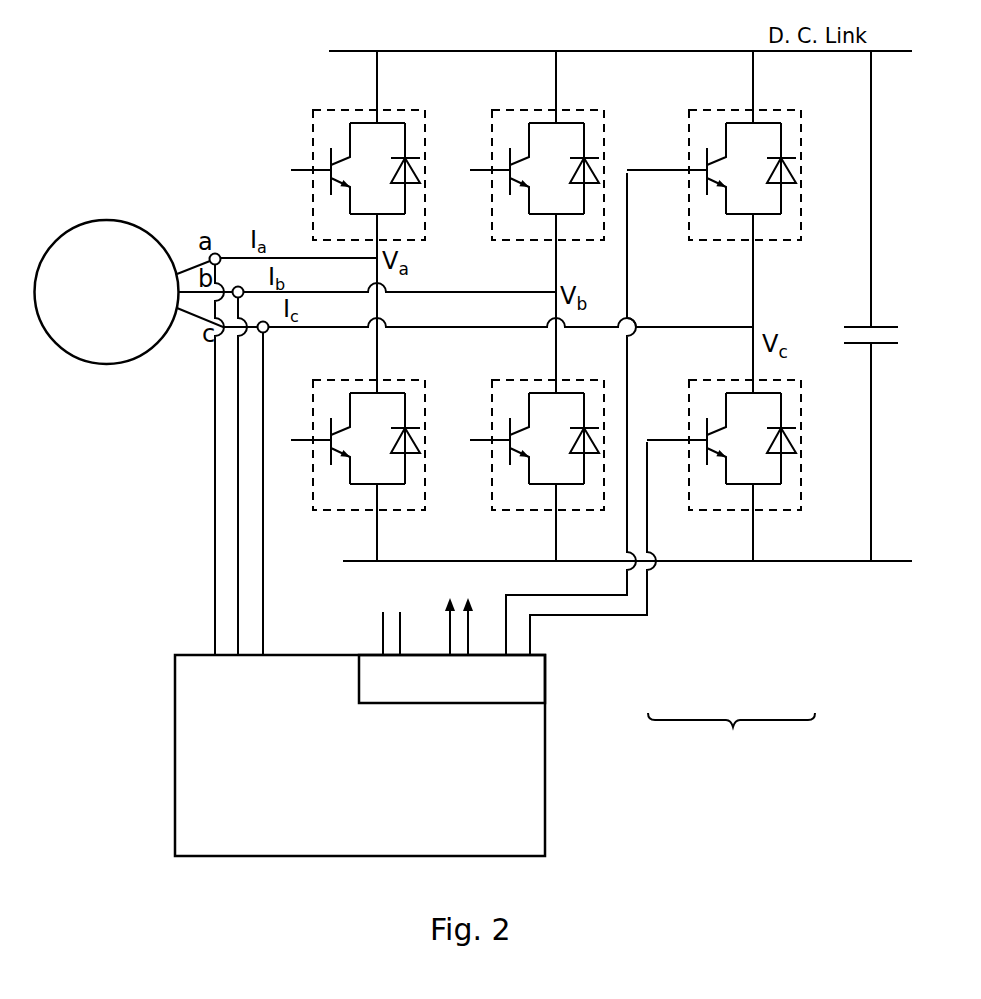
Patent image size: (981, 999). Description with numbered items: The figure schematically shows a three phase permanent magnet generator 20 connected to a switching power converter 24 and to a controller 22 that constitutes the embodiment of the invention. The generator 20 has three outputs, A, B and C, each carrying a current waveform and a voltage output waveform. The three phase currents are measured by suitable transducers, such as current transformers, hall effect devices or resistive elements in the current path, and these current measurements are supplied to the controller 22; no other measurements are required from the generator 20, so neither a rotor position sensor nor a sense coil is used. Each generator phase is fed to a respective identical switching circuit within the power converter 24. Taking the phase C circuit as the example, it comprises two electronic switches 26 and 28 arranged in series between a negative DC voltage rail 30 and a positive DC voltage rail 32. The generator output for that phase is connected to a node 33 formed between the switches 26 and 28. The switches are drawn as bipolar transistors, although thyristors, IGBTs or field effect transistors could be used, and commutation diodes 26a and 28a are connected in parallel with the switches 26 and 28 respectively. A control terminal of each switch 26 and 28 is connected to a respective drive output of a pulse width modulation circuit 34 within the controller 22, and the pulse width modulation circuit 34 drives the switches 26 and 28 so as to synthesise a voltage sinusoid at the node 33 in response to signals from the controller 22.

The three phase permanent magnet generator 20 is at (108, 217).
The controller 22 is at (545, 805).
The power converter 24 is at (731, 738).
The electronic switch 26 is at (720, 462).
The commutation diode 26a is at (796, 453).
The electronic switch 28 is at (720, 193).
The commutation diode 28a is at (796, 183).
The negative DC voltage rail 30 is at (795, 562).
The positive DC voltage rail 32 is at (708, 50).
The node 33 is at (757, 326).
The pulse width modulation circuit 34 is at (540, 673).